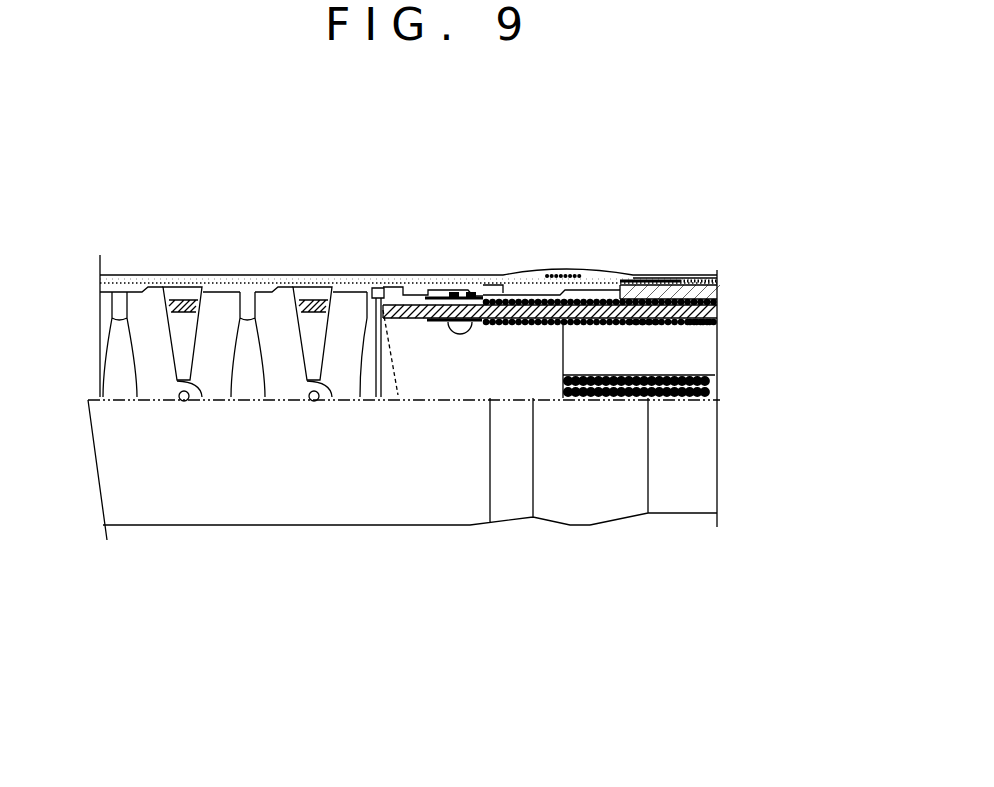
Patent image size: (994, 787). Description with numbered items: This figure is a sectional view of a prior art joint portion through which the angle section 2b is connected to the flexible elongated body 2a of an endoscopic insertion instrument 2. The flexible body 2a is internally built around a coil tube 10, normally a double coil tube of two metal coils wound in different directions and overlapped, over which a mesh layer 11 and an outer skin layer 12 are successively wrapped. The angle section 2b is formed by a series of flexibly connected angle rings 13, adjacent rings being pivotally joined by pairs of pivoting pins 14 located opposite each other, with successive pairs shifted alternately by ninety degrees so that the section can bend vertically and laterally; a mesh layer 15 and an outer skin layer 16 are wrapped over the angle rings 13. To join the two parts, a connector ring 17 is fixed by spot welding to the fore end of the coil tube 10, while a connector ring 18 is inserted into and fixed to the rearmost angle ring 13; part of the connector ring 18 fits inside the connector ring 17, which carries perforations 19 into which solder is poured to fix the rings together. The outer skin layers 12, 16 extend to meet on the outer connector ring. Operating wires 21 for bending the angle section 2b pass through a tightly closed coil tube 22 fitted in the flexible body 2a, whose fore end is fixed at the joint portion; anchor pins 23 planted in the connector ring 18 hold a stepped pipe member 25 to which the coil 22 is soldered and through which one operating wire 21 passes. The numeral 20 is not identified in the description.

The insertion instrument 2 is at (470, 191).
The flexible elongated body 2a is at (699, 525).
The angle section 2b is at (204, 535).
The coil tube 10 is at (718, 303).
The mesh layer 11 is at (692, 283).
The outer skin layer 12 is at (707, 280).
The angle rings 13 is at (342, 300).
The pivoting pins 14 is at (186, 401).
The mesh layer 15 is at (188, 287).
The outer skin layer 16 is at (138, 282).
The connector ring 17 is at (602, 324).
The connector ring 18 is at (413, 289).
The perforations 19 is at (537, 320).
The lower bead row 20 is at (522, 324).
The operating wires 21 is at (645, 324).
The tightly closed coil tube 22 is at (688, 296).
The anchor pins 23 is at (456, 327).
The pipe member 25 is at (479, 323).